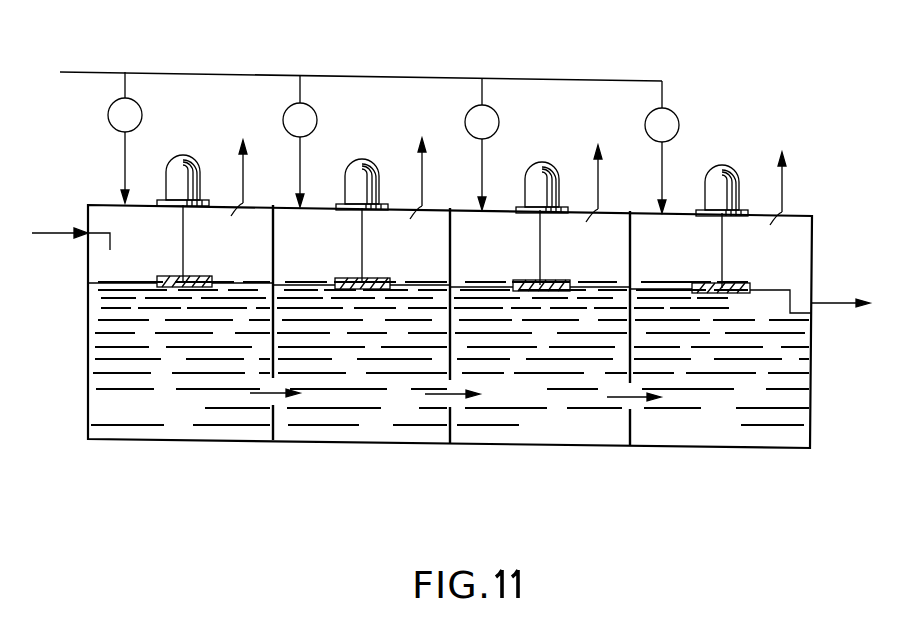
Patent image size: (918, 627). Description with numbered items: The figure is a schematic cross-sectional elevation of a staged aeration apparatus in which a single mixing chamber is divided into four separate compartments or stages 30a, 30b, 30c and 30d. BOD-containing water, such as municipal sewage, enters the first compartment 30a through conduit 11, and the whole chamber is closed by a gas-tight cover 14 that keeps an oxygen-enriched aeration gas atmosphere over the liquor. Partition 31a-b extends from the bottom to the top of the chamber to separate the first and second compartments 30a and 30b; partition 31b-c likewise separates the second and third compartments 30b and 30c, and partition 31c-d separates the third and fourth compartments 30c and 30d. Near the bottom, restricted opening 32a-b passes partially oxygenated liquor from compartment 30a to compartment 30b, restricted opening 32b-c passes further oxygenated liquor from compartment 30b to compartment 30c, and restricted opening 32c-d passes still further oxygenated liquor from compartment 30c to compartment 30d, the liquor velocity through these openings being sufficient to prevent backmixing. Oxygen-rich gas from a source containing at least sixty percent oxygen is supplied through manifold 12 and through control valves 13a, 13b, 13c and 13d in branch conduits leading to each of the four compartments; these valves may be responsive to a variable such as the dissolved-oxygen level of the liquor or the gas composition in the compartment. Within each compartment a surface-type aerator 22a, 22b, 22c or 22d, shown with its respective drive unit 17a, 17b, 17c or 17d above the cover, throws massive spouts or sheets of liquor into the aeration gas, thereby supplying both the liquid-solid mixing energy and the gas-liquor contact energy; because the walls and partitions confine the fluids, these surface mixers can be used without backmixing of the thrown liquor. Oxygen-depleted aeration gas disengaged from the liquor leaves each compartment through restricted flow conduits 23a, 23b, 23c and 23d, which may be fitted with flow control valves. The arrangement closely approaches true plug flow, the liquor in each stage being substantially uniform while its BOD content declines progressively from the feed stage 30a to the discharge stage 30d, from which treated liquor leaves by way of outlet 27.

The conduit 11 is at (38, 228).
The manifold 12 is at (71, 72).
The control valve 13a is at (108, 112).
The control valve 13b is at (284, 126).
The control valve 13c is at (466, 121).
The control valve 13d is at (646, 124).
The gas-tight cover 14 is at (281, 205).
The indicator lamp 17a is at (183, 160).
The indicator lamp 17b is at (362, 164).
The indicator lamp 17c is at (541, 167).
The indicator lamp 17d is at (724, 170).
The surface-type aerator 22a is at (158, 275).
The surface-type aerator 22b is at (341, 277).
The surface-type aerator 22c is at (521, 279).
The surface-type aerator 22d is at (700, 282).
The restricted flow conduit 23a is at (242, 207).
The restricted flow conduit 23b is at (420, 209).
The restricted flow conduit 23c is at (600, 210).
The restricted flow conduit 23d is at (778, 213).
The liquid outlet 27 is at (831, 300).
The first compartment 30a is at (128, 431).
The second compartment 30b is at (345, 433).
The third compartment 30c is at (552, 433).
The fourth compartment 30d is at (722, 438).
The partition 31a-b is at (272, 266).
The partition 31b-c is at (449, 266).
The partition 31c-d is at (629, 267).
The restricted opening 32a-b is at (265, 398).
The restricted opening 32b-c is at (448, 400).
The restricted opening 32c-d is at (627, 403).